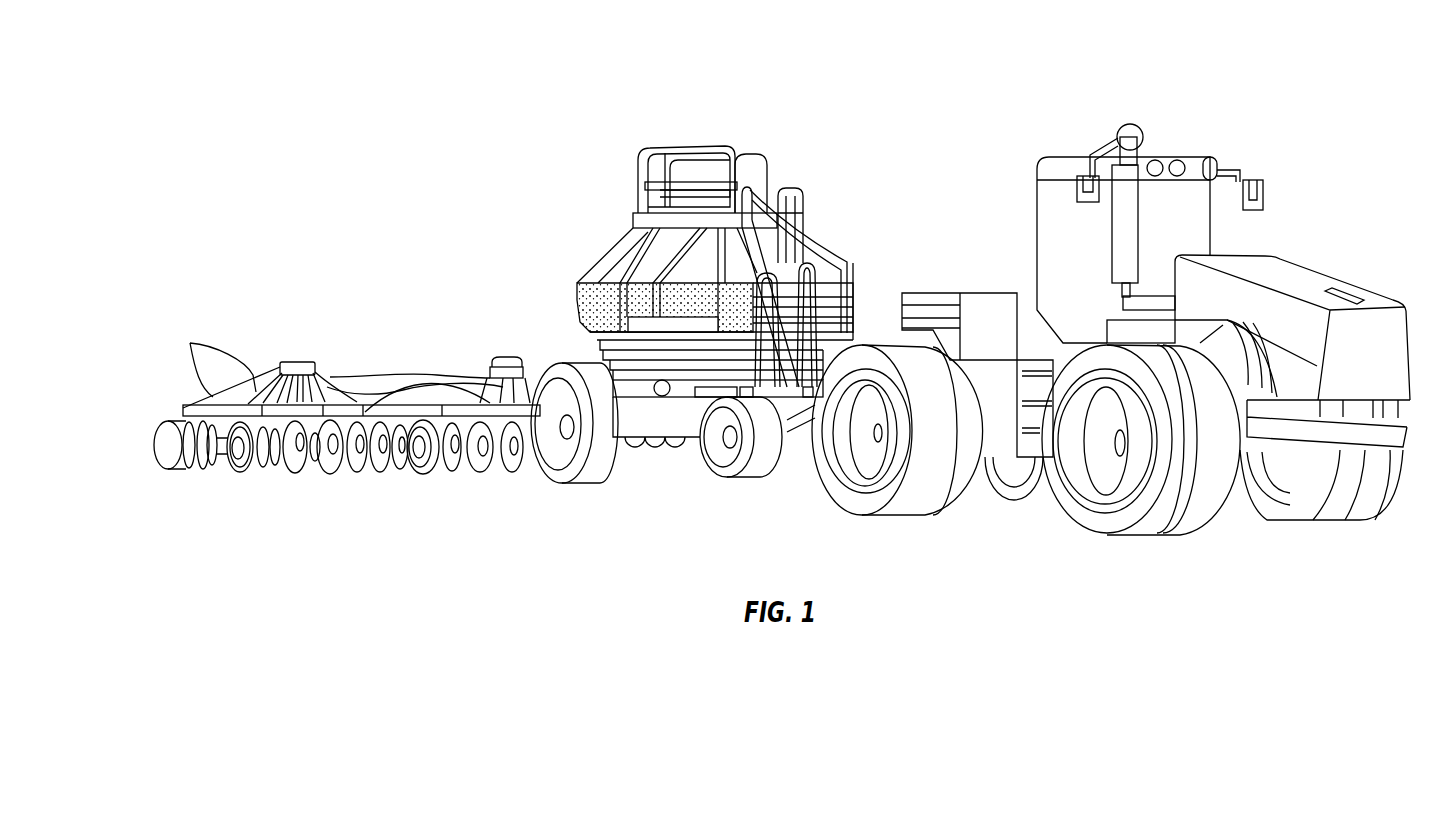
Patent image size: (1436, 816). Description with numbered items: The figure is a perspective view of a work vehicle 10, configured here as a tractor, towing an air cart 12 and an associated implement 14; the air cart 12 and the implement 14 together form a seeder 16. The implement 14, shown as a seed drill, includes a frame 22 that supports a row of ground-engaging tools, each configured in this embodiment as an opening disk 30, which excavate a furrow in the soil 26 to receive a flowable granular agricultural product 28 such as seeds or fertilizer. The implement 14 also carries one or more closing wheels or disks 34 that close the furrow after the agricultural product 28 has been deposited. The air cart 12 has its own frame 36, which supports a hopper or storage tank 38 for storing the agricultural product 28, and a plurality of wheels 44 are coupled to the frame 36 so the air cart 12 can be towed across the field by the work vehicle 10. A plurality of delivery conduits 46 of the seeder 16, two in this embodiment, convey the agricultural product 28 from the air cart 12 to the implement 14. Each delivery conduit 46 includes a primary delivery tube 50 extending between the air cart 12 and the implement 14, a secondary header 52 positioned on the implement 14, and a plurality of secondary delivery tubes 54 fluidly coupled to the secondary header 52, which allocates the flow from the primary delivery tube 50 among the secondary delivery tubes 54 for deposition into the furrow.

The work vehicle 10 is at (1266, 120).
The air cart 12 is at (690, 88).
The implement 14 is at (376, 196).
The seeder 16 is at (270, 150).
The frame 22 is at (414, 405).
The soil 26 is at (478, 470).
The agricultural product 28 is at (598, 290).
The opening disk 30 is at (298, 462).
The closing wheel 34 is at (183, 470).
The frame 36 is at (707, 398).
The hopper 38 is at (630, 247).
The wheels 44 is at (600, 462).
The delivery conduit 46 is at (246, 320).
The primary delivery tube 50 is at (335, 378).
The secondary header 52 is at (296, 362).
The secondary delivery tubes 54 is at (214, 351).